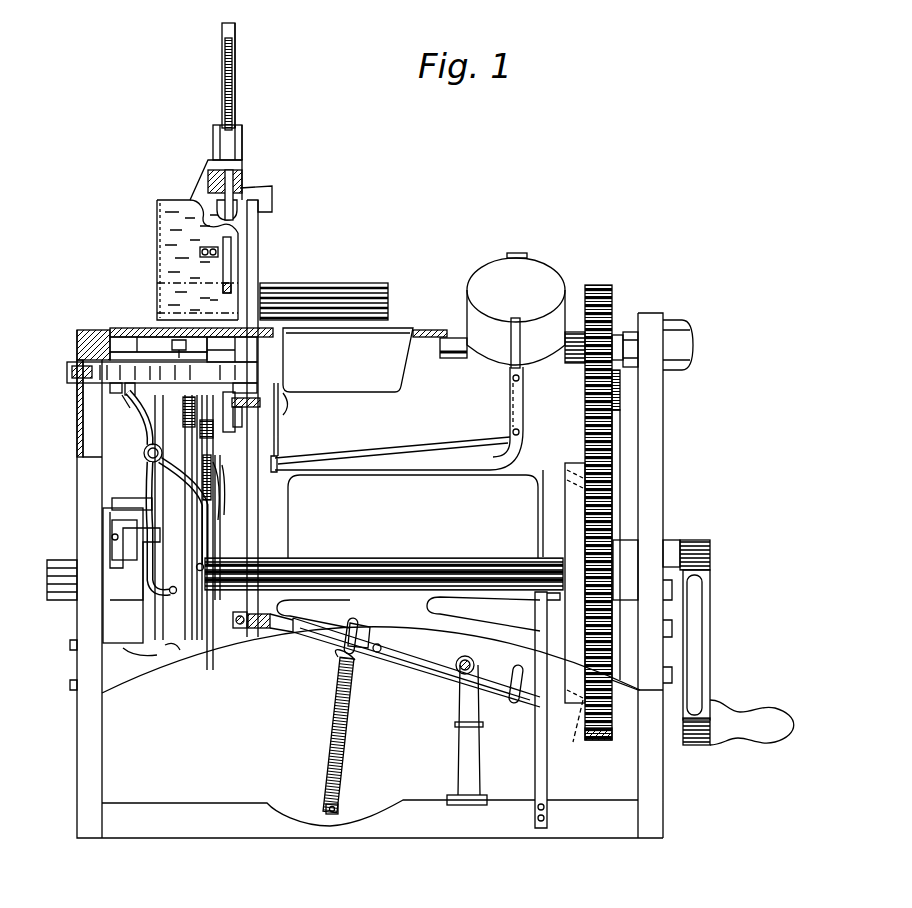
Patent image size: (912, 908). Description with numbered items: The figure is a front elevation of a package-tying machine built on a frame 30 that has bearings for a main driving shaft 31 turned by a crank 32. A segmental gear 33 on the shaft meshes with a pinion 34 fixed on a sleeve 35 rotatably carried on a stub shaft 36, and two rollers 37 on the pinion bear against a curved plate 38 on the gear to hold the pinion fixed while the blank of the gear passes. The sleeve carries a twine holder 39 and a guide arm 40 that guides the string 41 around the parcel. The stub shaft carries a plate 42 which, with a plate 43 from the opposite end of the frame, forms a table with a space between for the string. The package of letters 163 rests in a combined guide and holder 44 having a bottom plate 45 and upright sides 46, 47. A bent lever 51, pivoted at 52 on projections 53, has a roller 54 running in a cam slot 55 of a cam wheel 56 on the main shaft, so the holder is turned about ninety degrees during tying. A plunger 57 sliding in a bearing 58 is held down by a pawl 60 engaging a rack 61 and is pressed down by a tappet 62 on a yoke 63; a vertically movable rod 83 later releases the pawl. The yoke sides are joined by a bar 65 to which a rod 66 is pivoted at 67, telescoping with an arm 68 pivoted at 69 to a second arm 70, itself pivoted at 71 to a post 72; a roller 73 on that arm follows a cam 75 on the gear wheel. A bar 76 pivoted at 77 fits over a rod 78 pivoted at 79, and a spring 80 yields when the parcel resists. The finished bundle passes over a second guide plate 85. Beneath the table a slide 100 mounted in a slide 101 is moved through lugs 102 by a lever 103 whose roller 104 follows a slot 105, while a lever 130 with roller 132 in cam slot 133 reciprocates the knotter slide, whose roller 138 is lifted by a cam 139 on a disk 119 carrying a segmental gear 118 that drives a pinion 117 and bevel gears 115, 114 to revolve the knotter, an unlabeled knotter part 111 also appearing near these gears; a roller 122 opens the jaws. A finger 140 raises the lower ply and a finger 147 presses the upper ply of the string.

The frame 30 is at (103, 788).
The main driving shaft 31 is at (407, 559).
The crank 32 is at (708, 661).
The segmental gear 33 is at (598, 738).
The pinion 34 is at (603, 285).
The sleeve 35 is at (573, 335).
The stub shaft 36 is at (622, 335).
The rollers 37 is at (621, 405).
The curved plate or segment 38 is at (622, 430).
The cord or twine holder 39 is at (527, 266).
The guide arm 40 is at (526, 413).
The string or cord 41 is at (442, 448).
The plate 42 is at (336, 335).
The plate 43 is at (120, 330).
The combined guide and holder 44 is at (156, 240).
The bottom plate 45 is at (180, 318).
The side or abutment 46 is at (177, 207).
The side or abutment 47 is at (157, 212).
The bent lever 51 is at (137, 505).
The pivot shaft 52 is at (144, 454).
The projections 53 is at (152, 430).
The roller 54 is at (112, 535).
The cam slot 55 is at (115, 553).
The cam wheel 56 is at (113, 617).
The plunger 57 is at (236, 110).
The bearing 58 is at (243, 163).
The pawl 60 is at (233, 96).
The toothed rack 61 is at (233, 72).
The tappet 62 is at (242, 201).
The yoke 63 is at (262, 222).
The bar or rod 65 is at (242, 630).
The rod 66 is at (292, 640).
The pivot 67 is at (268, 632).
The arm 68 is at (320, 640).
The pivot 69 is at (377, 655).
The second arm 70 is at (443, 662).
The pivot 71 is at (462, 675).
The vertical post 72 is at (462, 760).
The roller 73 is at (570, 728).
The cam 75 is at (573, 525).
The bar 76 is at (407, 663).
The pivot 77 is at (511, 703).
The rod 78 is at (345, 738).
The pivot 79 is at (336, 660).
The spring 80 is at (343, 754).
The vertically movable rod 83 is at (232, 263).
The second guide plate 85 is at (413, 516).
The reciprocating bar or slide 100 is at (112, 378).
The reciprocating member or slide 101 is at (72, 366).
The lugs or projections 102 is at (118, 385).
The lever 103 is at (125, 408).
The roller 104 is at (204, 563).
The slot 105 is at (199, 642).
The bar 111 is at (262, 352).
The bevel gear 114 is at (255, 395).
The gear 115 is at (258, 412).
The pinion 117 is at (187, 428).
The segmental gear 118 is at (206, 465).
The disk or plate 119 is at (214, 545).
The roller 122 is at (275, 368).
The lever 130 is at (150, 503).
The roller 132 is at (177, 648).
The cam slot 133 is at (196, 650).
The roller 138 is at (214, 446).
The cam 139 is at (222, 476).
The bent arm or finger 140 is at (300, 397).
The finger or lever 147 is at (262, 340).
The package of letters 163 is at (367, 283).